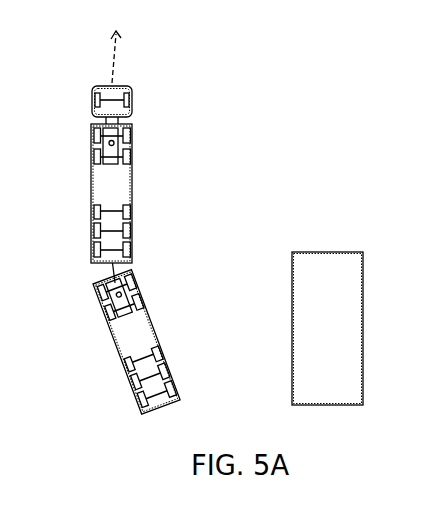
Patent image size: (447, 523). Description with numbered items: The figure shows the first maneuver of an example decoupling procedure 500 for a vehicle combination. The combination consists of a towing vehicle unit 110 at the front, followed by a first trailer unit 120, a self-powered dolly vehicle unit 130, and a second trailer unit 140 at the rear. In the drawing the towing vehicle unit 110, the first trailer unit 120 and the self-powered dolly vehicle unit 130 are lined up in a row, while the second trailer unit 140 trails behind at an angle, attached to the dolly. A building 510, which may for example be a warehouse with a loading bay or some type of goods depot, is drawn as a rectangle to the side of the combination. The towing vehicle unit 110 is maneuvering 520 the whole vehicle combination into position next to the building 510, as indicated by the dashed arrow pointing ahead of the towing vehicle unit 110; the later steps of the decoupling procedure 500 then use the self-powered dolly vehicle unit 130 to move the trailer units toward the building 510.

The decoupling procedure 500 is at (366, 60).
The building 510 is at (344, 305).
The maneuvering 520 is at (138, 51).
The towing vehicle unit 110 is at (93, 94).
The first trailer unit 120 is at (91, 171).
The self-powered dolly vehicle unit 130 is at (112, 276).
The second trailer unit 140 is at (109, 327).